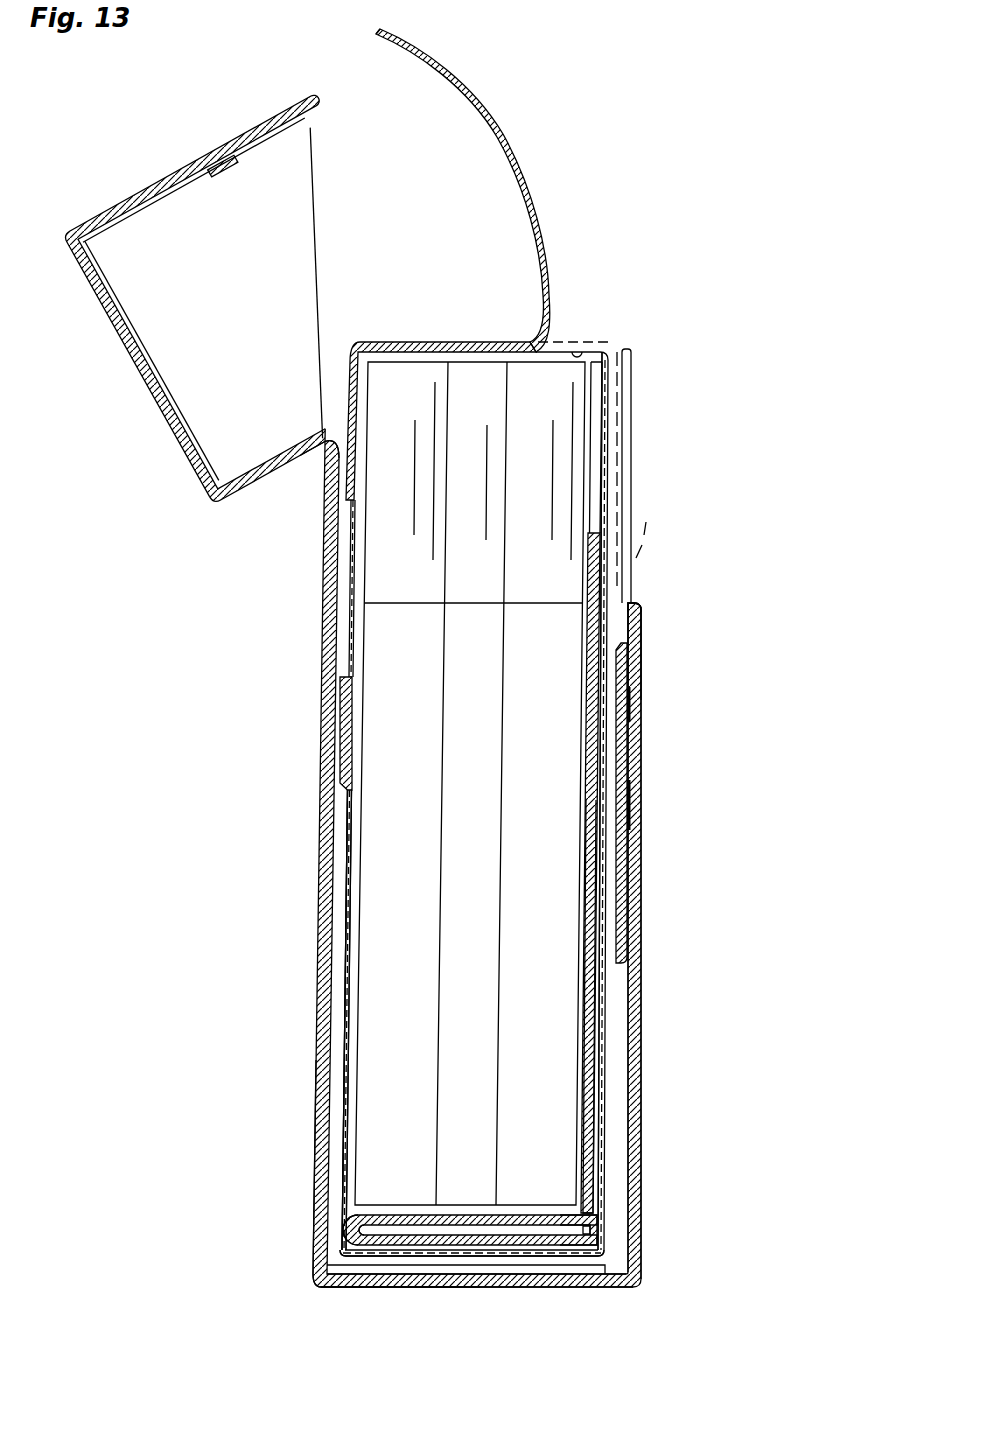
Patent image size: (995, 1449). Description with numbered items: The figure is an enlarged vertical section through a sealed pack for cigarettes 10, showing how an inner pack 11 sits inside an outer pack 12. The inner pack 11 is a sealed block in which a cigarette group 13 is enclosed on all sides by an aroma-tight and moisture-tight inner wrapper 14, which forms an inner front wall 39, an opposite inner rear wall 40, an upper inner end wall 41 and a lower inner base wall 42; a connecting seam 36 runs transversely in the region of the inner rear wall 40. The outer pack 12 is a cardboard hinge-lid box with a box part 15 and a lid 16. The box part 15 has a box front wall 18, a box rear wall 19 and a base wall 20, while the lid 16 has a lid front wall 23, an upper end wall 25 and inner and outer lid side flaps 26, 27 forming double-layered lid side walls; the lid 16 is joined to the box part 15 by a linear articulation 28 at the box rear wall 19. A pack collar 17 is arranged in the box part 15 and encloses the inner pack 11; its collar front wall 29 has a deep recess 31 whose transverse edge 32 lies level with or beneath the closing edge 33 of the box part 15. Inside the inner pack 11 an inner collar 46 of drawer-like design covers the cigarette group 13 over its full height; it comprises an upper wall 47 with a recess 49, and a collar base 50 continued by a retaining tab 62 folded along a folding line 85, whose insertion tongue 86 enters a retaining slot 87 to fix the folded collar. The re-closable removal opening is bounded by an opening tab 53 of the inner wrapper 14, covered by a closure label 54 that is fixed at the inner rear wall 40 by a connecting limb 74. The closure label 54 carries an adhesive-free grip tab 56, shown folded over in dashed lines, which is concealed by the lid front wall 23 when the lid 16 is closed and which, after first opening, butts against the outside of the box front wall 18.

The cigarettes 10 is at (540, 1015).
The inner pack 11 is at (642, 152).
The outer pack 12 is at (234, 640).
The cigarette group 13 is at (352, 942).
The inner wrapper 14 is at (344, 1080).
The box part 15 is at (255, 1042).
The lid 16 is at (86, 397).
The pack collar 17 is at (660, 400).
The box front wall 18 is at (642, 860).
The box rear wall 19 is at (326, 808).
The base wall 20 is at (519, 1277).
The lid front wall 23 is at (96, 218).
The upper end wall 25 is at (106, 318).
The inner lid side flap 26 is at (218, 235).
The outer lid side flap 27 is at (190, 132).
The linear articulation 28 is at (303, 475).
The collar front wall 29 is at (626, 358).
The recess 31 is at (626, 505).
The transverse edge 32 is at (646, 622).
The closing edge 33 is at (637, 603).
The connecting seam 36 is at (345, 735).
The inner front wall 39 is at (603, 1113).
The inner rear wall 40 is at (347, 875).
The upper inner end wall 41 is at (580, 350).
The lower inner base wall 42 is at (457, 1253).
The inner collar 46 is at (598, 1060).
The upper wall 47 is at (594, 935).
The recess 49 is at (598, 536).
The collar base 50 is at (606, 1268).
The opening tab 53 is at (500, 135).
The closure label 54 is at (508, 68).
The grip tab 56 is at (390, 40).
The retaining tab 62 is at (478, 1215).
The connecting limb 74 is at (350, 385).
The folding line 85 is at (355, 1232).
The insertion tongue 86 is at (598, 1222).
The retaining slot 87 is at (592, 1207).